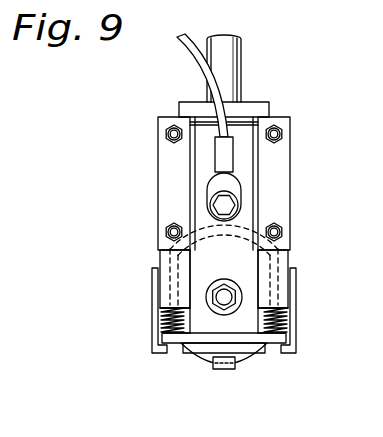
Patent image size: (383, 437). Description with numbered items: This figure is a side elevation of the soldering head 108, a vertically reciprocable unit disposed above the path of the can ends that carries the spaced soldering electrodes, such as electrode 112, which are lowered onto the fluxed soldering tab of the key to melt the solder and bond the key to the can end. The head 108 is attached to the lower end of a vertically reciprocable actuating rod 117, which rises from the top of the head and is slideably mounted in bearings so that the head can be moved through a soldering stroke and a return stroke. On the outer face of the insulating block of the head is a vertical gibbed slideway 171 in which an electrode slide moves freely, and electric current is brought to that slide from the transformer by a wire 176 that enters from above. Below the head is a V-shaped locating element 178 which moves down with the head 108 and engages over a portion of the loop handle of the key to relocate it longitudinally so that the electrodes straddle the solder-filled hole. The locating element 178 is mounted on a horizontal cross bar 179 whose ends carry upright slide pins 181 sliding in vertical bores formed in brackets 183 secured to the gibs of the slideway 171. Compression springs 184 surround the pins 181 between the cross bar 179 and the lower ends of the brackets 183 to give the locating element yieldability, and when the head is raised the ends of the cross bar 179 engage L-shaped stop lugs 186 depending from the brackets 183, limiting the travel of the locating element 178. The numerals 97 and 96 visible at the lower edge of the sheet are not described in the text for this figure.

The soldering head 108 is at (293, 190).
The soldering electrode 112 is at (212, 362).
The actuating rod 117 is at (229, 58).
The gibbed slideway 171 is at (258, 158).
The wire 176 is at (192, 52).
The locating element 178 is at (227, 368).
The cross bar 179 is at (196, 340).
The slide pins 181 is at (165, 313).
The brackets 183 is at (170, 262).
The compression springs 184 is at (168, 323).
The stop lugs 186 is at (160, 346).
The partial numeral 97 is at (271, 427).
The partial numeral 96 is at (304, 429).